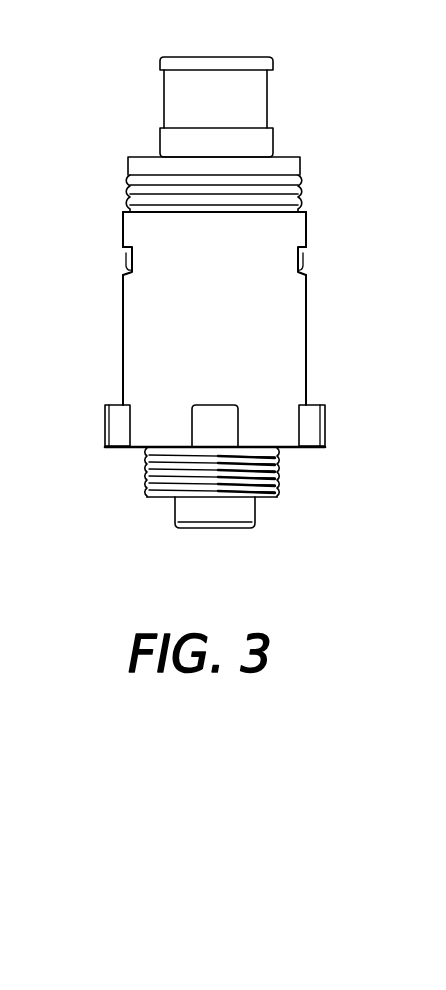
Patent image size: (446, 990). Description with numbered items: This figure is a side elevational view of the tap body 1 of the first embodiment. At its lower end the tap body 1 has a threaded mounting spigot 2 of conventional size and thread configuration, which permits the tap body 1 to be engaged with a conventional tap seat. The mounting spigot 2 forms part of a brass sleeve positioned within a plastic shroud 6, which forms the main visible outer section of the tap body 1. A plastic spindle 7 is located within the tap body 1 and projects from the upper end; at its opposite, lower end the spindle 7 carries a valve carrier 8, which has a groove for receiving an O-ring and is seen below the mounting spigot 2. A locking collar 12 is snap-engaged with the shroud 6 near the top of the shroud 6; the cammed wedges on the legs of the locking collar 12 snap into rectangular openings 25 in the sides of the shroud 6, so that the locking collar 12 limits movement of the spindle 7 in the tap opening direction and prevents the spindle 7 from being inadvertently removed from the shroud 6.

The tap body 1 is at (116, 118).
The plastic spindle 7 is at (253, 95).
The locking collar 12 is at (293, 158).
The plastic shroud 6 is at (232, 341).
The rectangular openings 25 is at (123, 274).
The threaded mounting spigot 2 is at (278, 469).
The valve carrier 8 is at (186, 508).